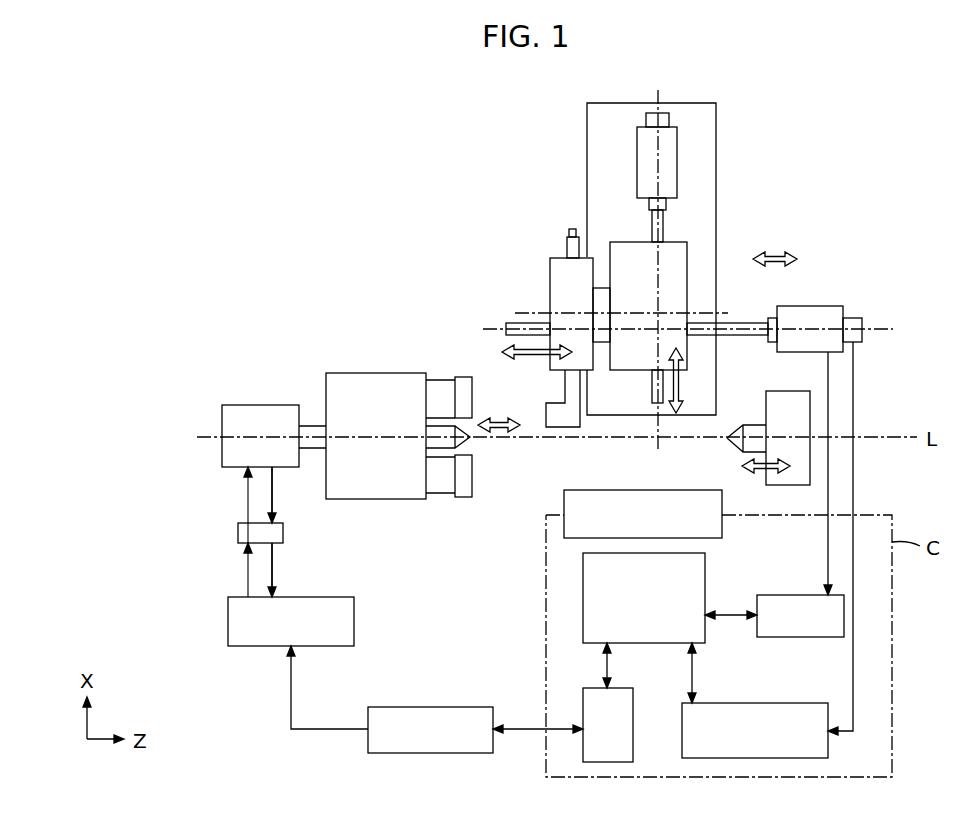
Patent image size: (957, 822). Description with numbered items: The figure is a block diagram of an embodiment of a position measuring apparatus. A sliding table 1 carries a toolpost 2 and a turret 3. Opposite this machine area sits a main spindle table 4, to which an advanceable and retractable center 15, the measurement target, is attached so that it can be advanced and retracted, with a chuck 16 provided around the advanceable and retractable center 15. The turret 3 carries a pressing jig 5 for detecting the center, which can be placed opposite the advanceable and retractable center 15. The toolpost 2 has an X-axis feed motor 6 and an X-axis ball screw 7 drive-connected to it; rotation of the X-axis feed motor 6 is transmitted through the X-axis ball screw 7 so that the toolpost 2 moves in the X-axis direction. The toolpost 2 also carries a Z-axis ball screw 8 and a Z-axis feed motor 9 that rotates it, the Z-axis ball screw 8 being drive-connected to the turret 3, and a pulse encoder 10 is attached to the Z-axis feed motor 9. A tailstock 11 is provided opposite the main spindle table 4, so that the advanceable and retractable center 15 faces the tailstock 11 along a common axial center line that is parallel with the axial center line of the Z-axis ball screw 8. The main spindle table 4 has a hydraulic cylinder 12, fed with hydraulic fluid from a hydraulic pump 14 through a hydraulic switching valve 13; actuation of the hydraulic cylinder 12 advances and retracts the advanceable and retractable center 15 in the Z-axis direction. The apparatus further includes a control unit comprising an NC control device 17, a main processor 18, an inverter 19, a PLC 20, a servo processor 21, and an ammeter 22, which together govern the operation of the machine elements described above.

The sliding table 1 is at (600, 125).
The toolpost 2 is at (627, 252).
The turret 3 is at (560, 274).
The main spindle table 4 is at (394, 378).
The pressing jig 5 is at (548, 410).
The X-axis feed motor 6 is at (668, 150).
The X-axis ball screw 7 is at (664, 222).
The Z-axis ball screw 8 is at (742, 324).
The Z-axis feed motor 9 is at (825, 313).
The pulse encoder 10 is at (853, 322).
The tailstock 11 is at (778, 397).
The hydraulic cylinder 12 is at (257, 412).
The hydraulic switching valve 13 is at (238, 535).
The hydraulic pump 14 is at (228, 628).
The advanceable and retractable center 15 is at (466, 442).
The chuck 16 is at (462, 495).
The NC control device 17 is at (564, 502).
The main processor 18 is at (583, 595).
The inverter 19 is at (390, 710).
The PLC 20 is at (633, 700).
The servo processor 21 is at (738, 703).
The ammeter 22 is at (773, 595).